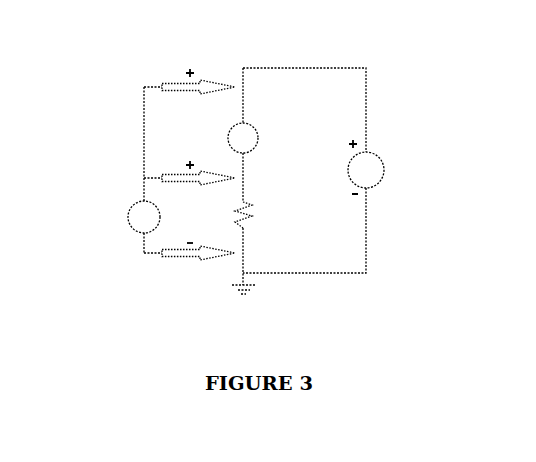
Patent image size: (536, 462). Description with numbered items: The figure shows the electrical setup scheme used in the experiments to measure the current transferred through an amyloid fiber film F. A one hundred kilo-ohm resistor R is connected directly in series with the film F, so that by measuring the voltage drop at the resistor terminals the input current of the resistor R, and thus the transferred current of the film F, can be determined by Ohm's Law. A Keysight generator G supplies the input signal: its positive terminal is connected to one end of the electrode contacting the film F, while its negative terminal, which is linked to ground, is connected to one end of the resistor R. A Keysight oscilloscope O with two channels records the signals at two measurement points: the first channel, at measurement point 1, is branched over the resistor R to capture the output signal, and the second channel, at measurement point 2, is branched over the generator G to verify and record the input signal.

The first measurement point 1 is at (198, 89).
The second measurement point 2 is at (198, 181).
The oscilloscope O is at (144, 217).
The amyloid fiber film F is at (243, 138).
The generator G is at (366, 167).
The 100 kΩ resistor R is at (251, 215).